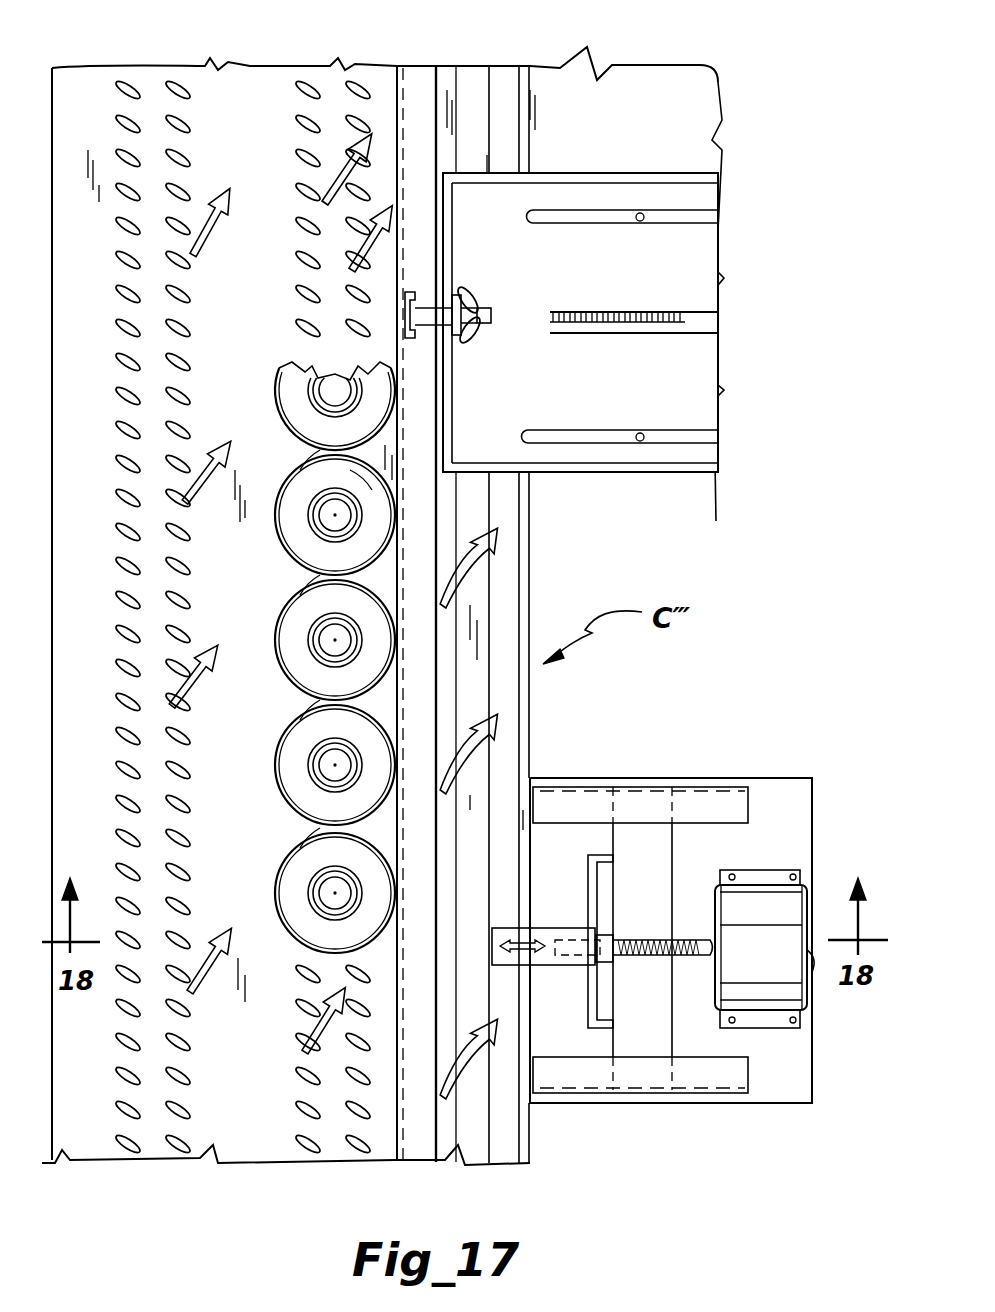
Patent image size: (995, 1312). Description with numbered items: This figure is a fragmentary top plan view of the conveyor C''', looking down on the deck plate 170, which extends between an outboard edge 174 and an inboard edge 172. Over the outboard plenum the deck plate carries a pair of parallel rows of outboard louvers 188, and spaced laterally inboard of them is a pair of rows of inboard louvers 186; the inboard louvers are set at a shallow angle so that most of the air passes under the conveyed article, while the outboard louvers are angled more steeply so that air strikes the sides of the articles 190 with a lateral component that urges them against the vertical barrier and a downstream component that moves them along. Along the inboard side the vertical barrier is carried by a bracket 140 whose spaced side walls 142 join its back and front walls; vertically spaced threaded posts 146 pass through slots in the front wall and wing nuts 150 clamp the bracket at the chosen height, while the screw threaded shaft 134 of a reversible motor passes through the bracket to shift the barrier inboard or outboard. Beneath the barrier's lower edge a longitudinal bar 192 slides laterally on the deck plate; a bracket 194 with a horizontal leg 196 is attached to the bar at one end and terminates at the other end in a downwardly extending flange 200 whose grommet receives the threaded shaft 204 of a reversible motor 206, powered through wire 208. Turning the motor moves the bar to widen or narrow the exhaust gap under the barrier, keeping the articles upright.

The outboard edge 174 is at (52, 68).
The deck plate 170 is at (345, 40).
The inboard edge 172 is at (522, 130).
The side walls 142 is at (667, 173).
The bracket 140 is at (620, 300).
The wing nuts 150 is at (476, 298).
The screw threaded shaft 134 is at (645, 288).
The threaded posts 146 is at (483, 330).
The articles 190 is at (291, 464).
The outboard louvers 188 is at (180, 850).
The inboard louvers 186 is at (332, 1093).
The longitudinal bar 192 is at (472, 790).
The horizontal leg 196 is at (577, 893).
The downwardly extending flange 200 is at (590, 892).
The reversible motor 206 is at (798, 885).
The threaded shaft 204 is at (652, 957).
The wire 208 is at (813, 972).
The brackets 194 is at (565, 978).